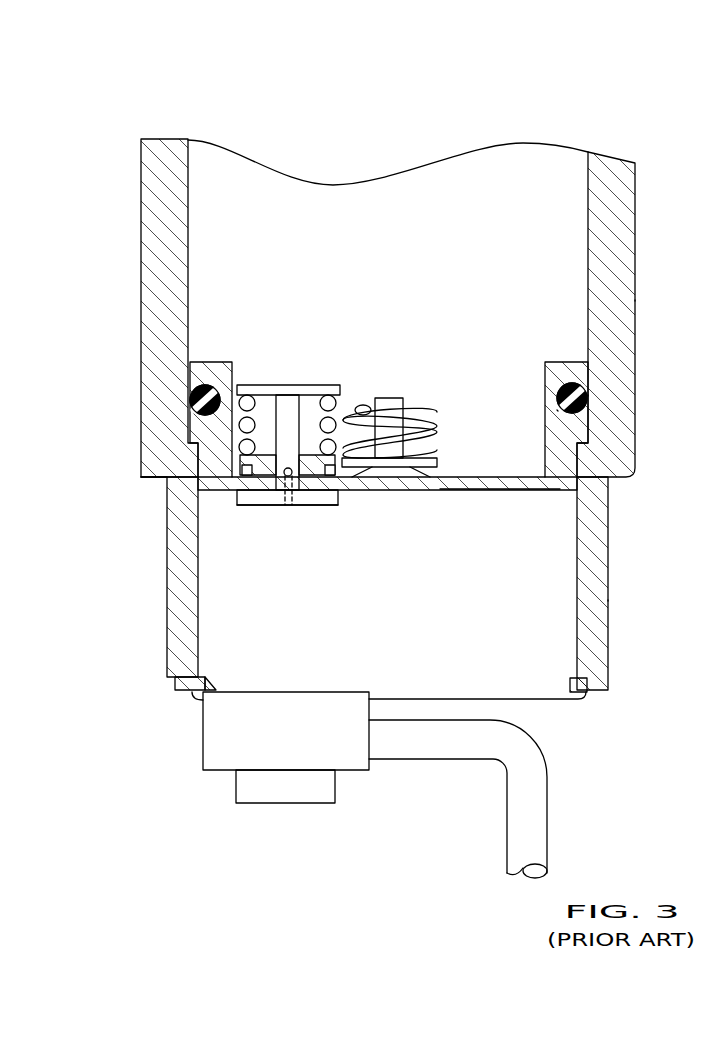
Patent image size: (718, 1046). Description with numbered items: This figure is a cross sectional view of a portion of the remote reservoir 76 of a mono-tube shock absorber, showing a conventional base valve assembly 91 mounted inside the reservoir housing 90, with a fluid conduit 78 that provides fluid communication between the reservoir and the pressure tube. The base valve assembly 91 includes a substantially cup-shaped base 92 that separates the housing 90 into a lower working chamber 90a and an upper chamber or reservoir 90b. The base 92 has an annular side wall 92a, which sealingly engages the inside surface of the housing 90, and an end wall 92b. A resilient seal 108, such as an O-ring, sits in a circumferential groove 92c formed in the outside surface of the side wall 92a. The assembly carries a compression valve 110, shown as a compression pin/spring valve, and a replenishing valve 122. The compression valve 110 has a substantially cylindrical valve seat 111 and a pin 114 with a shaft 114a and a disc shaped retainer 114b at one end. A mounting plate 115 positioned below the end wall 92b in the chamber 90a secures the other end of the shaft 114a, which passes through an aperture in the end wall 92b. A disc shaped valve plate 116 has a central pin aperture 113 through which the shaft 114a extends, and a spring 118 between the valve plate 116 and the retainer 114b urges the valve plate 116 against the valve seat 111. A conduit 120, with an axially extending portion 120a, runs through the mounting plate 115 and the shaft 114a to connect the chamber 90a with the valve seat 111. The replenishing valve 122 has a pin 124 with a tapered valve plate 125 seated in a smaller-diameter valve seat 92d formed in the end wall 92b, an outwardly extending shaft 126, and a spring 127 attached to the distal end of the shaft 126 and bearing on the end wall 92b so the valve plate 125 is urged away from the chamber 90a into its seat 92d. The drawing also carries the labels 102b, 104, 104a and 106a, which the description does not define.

The remote reservoir 76 is at (108, 104).
The fluid conduit 78 is at (515, 818).
The housing 90 is at (137, 271).
The lower working chamber 90a is at (212, 603).
The upper chamber 90b is at (212, 240).
The base valve assembly 91 is at (534, 528).
The base 92 is at (213, 352).
The annular side wall 92a is at (195, 425).
The end wall 92b is at (483, 491).
The circumferential groove 92c is at (557, 380).
The valve seat 92d is at (420, 483).
The valve body lower portion 102b is at (327, 506).
The housing wall 104 is at (717, 178).
The lower housing wall 104a is at (663, 579).
The housing shoulder 106a is at (717, 393).
The resilient seal 108 is at (557, 410).
The compression valve 110 is at (320, 286).
The valve seat 111 is at (195, 470).
The pin aperture 113 is at (303, 462).
The pin 114 is at (342, 380).
The shaft 114a is at (290, 386).
The disc shaped retainer 114b is at (253, 386).
The mounting plate 115 is at (232, 497).
The valve plate 116 is at (315, 395).
The spring 118 is at (195, 448).
The conduit 120 is at (288, 521).
The axially extending portion 120a is at (281, 495).
The replenishing valve 122 is at (448, 341).
The pin 124 is at (408, 388).
The tapered valve plate 125 is at (387, 470).
The outwardly extending shaft 126 is at (382, 398).
The spring 127 is at (363, 398).